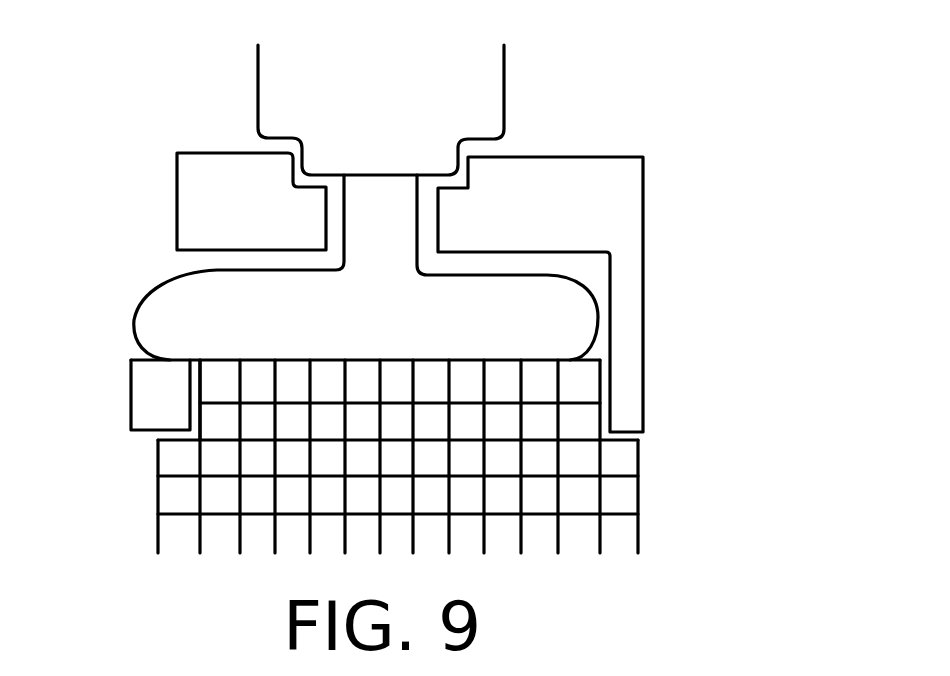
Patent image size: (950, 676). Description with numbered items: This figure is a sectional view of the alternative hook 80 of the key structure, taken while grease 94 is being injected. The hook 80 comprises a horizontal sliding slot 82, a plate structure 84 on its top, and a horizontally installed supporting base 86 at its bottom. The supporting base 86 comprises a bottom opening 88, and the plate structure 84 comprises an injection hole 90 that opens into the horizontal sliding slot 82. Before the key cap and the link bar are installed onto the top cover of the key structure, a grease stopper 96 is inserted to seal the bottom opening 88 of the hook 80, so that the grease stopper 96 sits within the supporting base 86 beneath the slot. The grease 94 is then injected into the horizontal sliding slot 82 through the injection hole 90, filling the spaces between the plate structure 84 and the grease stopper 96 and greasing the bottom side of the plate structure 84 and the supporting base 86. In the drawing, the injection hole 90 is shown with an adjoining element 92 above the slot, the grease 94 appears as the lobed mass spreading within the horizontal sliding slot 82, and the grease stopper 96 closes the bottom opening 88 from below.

The hook 80 is at (805, 152).
The horizontal sliding slot 82 is at (199, 260).
The plate structure 84 is at (215, 178).
The supporting base 86 is at (163, 394).
The bottom opening 88 is at (194, 419).
The injection hole 90 is at (427, 238).
The upper tool post 92 is at (477, 110).
The grease 94 is at (543, 312).
The grease stopper 96 is at (582, 470).